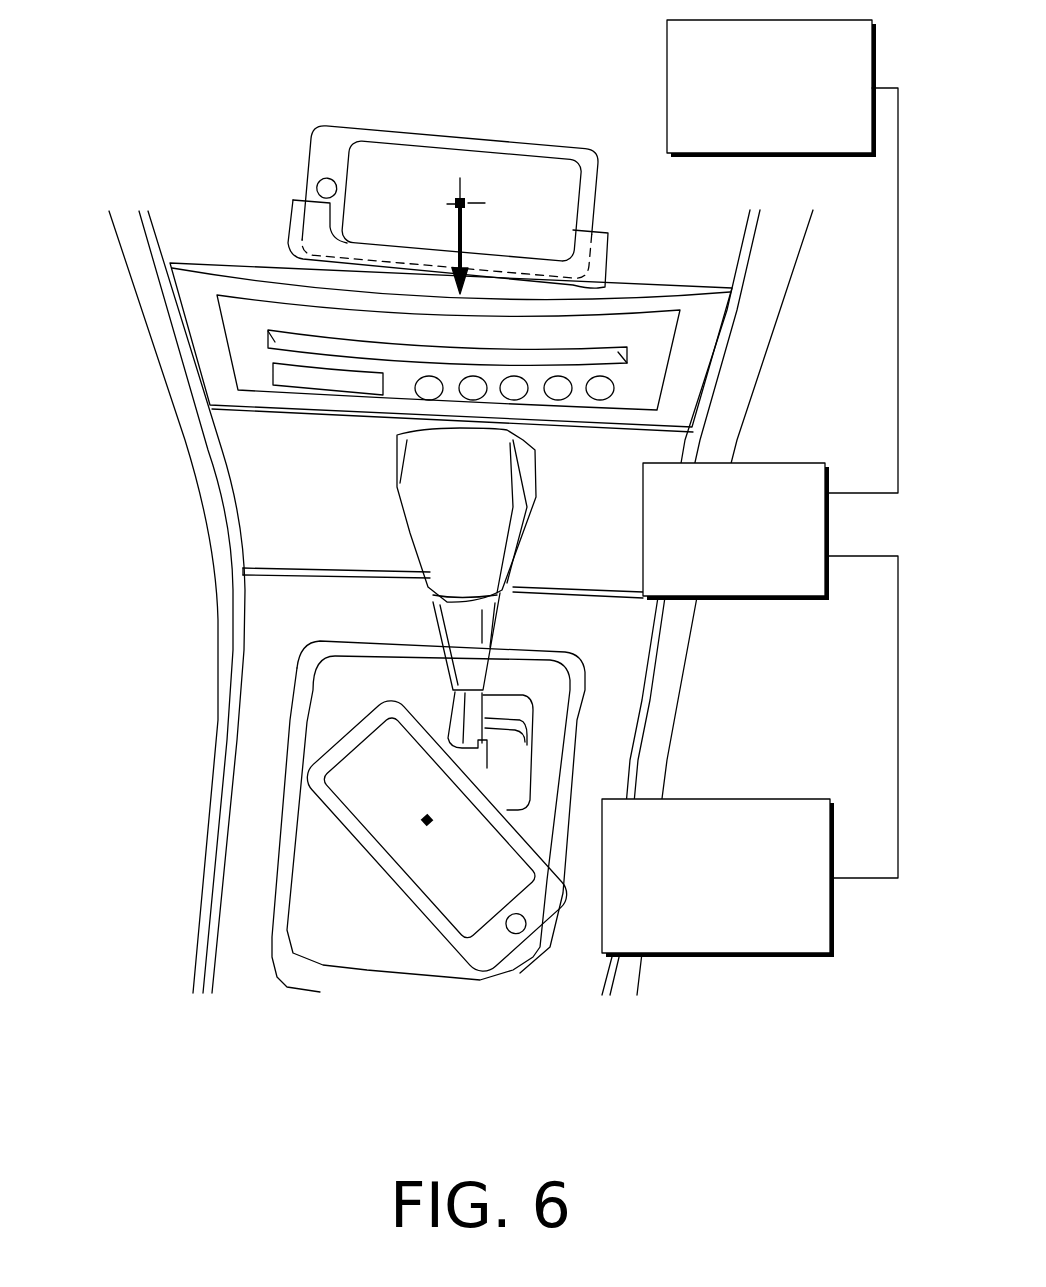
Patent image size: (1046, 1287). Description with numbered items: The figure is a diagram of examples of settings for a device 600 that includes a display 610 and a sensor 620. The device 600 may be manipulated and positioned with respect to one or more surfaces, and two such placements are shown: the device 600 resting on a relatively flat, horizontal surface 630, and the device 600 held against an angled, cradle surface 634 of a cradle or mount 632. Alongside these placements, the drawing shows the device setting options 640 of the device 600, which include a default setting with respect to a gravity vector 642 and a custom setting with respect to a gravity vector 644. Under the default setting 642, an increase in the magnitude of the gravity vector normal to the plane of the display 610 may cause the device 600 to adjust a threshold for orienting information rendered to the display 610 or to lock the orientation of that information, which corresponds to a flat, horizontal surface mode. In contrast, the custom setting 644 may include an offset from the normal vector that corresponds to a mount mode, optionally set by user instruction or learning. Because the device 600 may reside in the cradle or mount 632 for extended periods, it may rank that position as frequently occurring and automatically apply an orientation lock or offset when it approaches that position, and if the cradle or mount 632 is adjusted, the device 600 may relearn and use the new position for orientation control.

The device 600 is at (368, 125).
The display 610 is at (451, 540).
The sensor 620 is at (460, 198).
The relatively flat, horizontal surface 630 is at (368, 675).
The cradle or mount 632 is at (297, 245).
The angled, cradle surface 634 is at (307, 225).
The device setting options 640 is at (770, 670).
The default setting with respect to a gravity vector 642 is at (718, 878).
The custom setting with respect to a gravity vector 644 is at (782, 256).